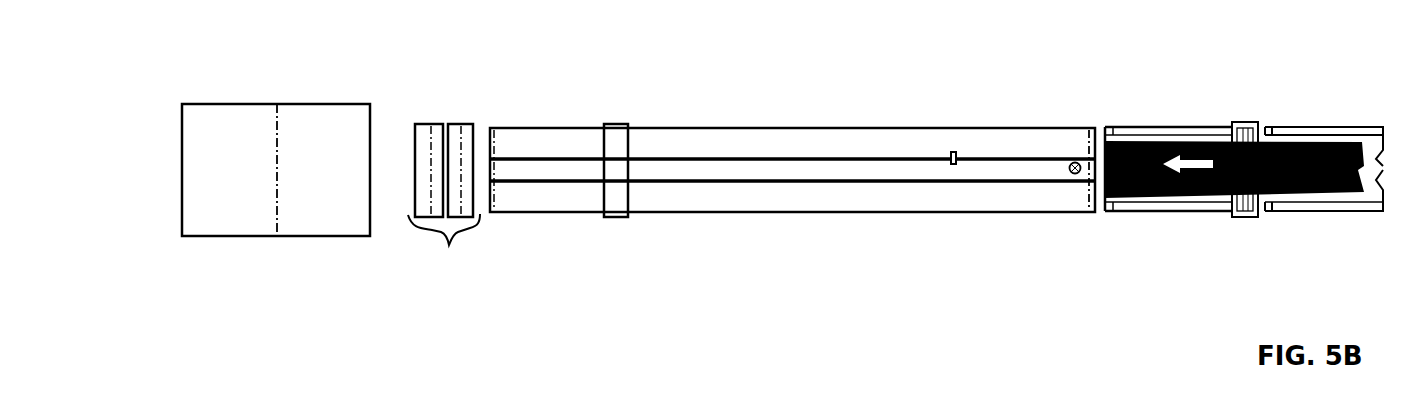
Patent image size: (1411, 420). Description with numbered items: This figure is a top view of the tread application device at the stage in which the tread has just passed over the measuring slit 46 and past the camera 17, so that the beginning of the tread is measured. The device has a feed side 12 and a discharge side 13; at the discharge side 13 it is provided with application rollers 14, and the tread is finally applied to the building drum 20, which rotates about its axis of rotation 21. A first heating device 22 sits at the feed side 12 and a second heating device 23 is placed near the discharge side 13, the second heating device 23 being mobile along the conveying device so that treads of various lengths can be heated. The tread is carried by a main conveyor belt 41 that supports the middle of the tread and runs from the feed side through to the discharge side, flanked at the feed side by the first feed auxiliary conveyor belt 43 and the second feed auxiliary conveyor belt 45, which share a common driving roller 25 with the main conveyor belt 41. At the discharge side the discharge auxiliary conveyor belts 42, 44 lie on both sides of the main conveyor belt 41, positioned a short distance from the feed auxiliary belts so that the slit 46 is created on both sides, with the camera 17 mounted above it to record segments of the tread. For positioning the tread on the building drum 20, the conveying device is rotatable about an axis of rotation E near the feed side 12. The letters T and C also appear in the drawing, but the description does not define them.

The building drum 20 is at (235, 127).
The axis of rotation 21 is at (278, 214).
The discharge side 13 is at (462, 104).
The application rollers 14 is at (456, 252).
The second heating device 23 is at (617, 127).
The discharge auxiliary conveyor belt 44 is at (745, 137).
The main conveyor belt 41 is at (823, 172).
The discharge auxiliary conveyor belt 42 is at (728, 202).
The axis of rotation E is at (1069, 165).
The camera 17 is at (1088, 183).
The second feed auxiliary conveyor belt 45 is at (1155, 127).
The common driving roller 25 is at (1220, 127).
The measuring slit 46 is at (1100, 126).
The first feed auxiliary conveyor belt 43 is at (1192, 208).
The feed side 12 is at (1192, 93).
The tissue T is at (1310, 140).
The compression arrow C is at (1176, 200).
The first heating device 22 is at (1247, 218).